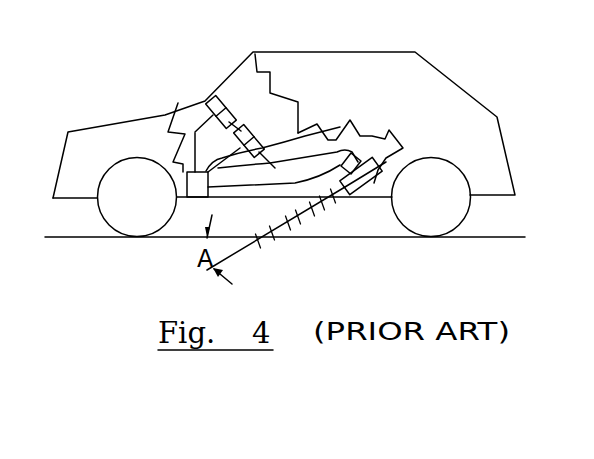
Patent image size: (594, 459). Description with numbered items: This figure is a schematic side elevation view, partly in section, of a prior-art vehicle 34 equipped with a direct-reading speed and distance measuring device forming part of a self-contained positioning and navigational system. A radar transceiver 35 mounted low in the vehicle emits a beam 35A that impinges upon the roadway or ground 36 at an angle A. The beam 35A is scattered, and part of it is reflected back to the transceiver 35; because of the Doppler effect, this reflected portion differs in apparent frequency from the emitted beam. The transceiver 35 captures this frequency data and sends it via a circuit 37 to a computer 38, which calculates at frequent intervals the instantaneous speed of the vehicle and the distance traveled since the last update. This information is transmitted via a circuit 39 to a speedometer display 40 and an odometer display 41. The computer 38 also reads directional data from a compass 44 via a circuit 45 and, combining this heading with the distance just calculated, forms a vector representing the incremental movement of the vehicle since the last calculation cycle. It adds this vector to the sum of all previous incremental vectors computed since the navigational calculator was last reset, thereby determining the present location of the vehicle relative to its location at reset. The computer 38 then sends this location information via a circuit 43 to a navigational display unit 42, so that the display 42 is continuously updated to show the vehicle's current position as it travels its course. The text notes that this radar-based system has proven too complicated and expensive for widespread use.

The vehicle 34 is at (487, 132).
The radar transceiver 35 is at (374, 183).
The beam 35A is at (343, 200).
The roadway or ground 36 is at (320, 213).
The circuit 37 is at (340, 127).
The computer 38 is at (189, 198).
The circuit 39 is at (195, 133).
The speedometer display 40 is at (215, 99).
The odometer display 41 is at (233, 114).
The navigational display unit 42 is at (260, 134).
The circuit 43 is at (245, 126).
The compass 44 is at (299, 125).
The circuit 45 is at (329, 139).